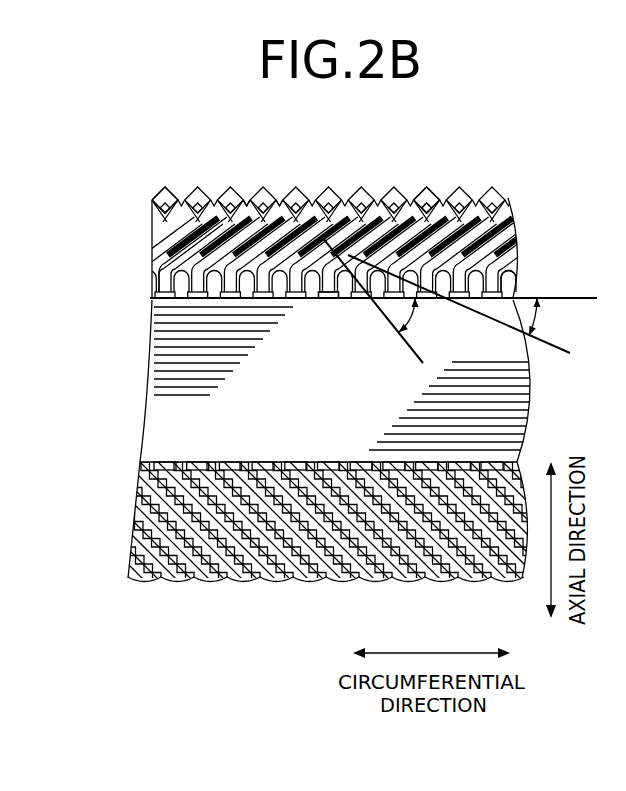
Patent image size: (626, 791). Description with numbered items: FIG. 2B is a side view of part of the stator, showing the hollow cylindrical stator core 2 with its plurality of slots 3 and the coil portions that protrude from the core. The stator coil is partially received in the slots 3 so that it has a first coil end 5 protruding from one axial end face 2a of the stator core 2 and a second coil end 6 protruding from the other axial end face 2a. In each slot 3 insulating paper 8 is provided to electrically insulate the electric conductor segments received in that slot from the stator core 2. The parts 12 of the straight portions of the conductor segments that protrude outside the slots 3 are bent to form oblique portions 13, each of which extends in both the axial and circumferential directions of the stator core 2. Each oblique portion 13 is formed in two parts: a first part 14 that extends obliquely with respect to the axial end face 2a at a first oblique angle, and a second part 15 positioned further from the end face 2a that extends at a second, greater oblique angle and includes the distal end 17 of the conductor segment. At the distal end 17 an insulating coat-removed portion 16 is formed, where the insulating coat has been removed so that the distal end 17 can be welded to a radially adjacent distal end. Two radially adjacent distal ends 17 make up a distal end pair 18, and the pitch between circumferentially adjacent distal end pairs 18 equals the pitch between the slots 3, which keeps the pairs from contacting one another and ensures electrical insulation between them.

The stator core 2 is at (152, 370).
The axial end face 2a is at (577, 297).
The slot 3 is at (326, 300).
The first coil end 5 is at (291, 595).
The second coil end 6 is at (518, 160).
The insulating paper 8 is at (508, 292).
The protruding part of straight portion 12 is at (152, 285).
The oblique portion 13 is at (160, 232).
The first part 14 is at (281, 208).
The second part 15 is at (247, 208).
The insulating coat-removed portion 16 is at (152, 184).
The distal end 17 is at (425, 182).
The distal end pair 18 is at (433, 182).